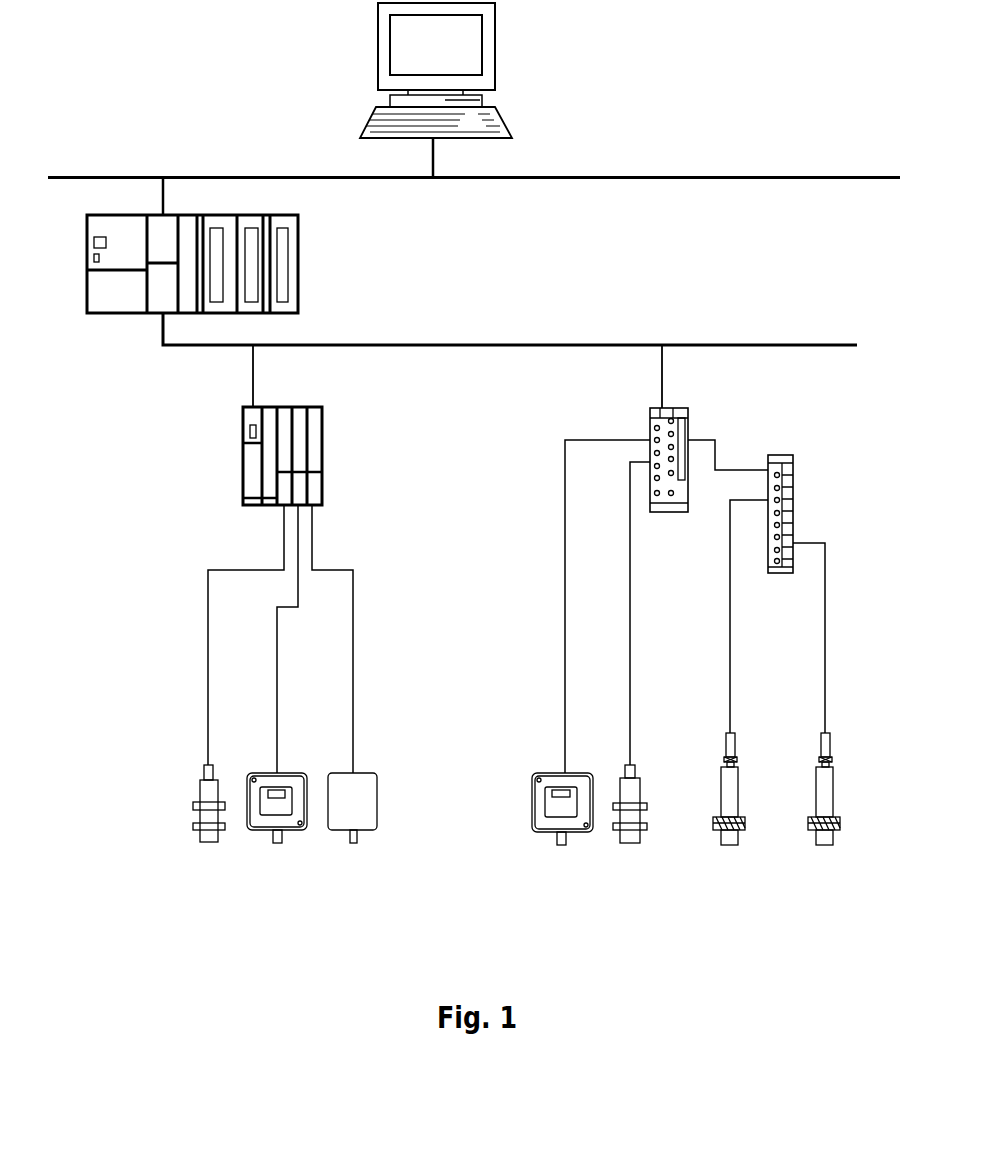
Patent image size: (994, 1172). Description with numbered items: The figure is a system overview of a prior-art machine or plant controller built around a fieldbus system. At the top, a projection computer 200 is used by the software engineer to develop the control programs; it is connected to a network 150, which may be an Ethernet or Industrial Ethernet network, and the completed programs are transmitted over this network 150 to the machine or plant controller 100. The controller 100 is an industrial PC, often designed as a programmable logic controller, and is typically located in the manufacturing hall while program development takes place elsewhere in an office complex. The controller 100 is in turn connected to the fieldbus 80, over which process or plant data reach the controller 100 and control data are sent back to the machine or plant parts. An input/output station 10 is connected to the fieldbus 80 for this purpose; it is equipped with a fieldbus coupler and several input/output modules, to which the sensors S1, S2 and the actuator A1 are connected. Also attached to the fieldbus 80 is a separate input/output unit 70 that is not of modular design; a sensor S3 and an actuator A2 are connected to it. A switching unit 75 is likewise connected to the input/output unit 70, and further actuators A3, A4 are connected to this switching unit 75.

The projection computer 200 is at (495, 48).
The network 150 is at (615, 177).
The machine or plant controller 100 is at (298, 240).
The fieldbus 80 is at (465, 345).
The input/output station 10 is at (322, 430).
The input/output unit 70 is at (663, 512).
The switching unit 75 is at (793, 482).
The sensor S1 is at (260, 832).
The sensor S2 is at (377, 800).
The sensor S3 is at (545, 773).
The actuator A1 is at (200, 792).
The actuator A2 is at (642, 795).
The actuator A3 is at (738, 798).
The actuator A4 is at (833, 798).